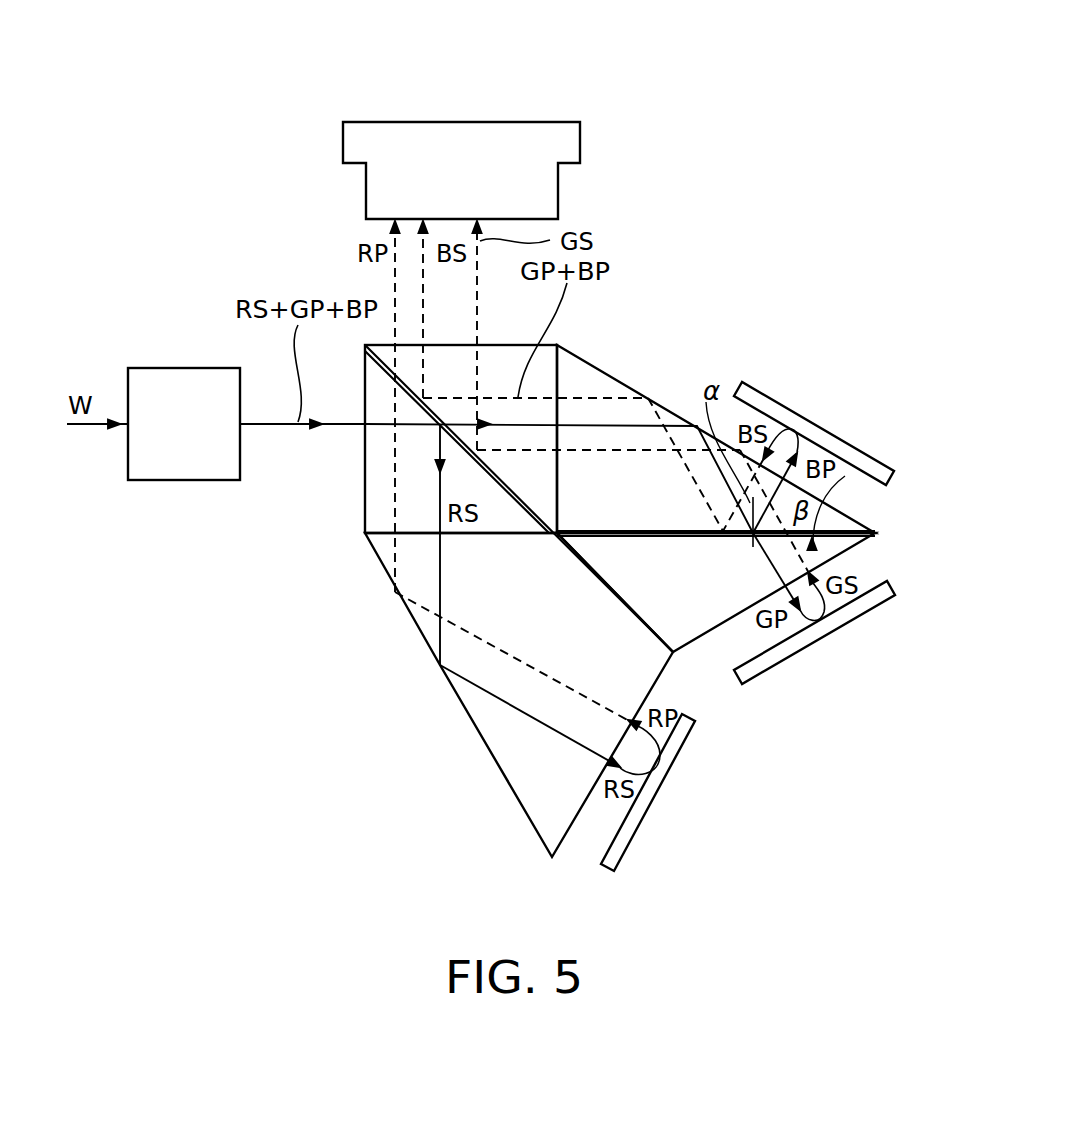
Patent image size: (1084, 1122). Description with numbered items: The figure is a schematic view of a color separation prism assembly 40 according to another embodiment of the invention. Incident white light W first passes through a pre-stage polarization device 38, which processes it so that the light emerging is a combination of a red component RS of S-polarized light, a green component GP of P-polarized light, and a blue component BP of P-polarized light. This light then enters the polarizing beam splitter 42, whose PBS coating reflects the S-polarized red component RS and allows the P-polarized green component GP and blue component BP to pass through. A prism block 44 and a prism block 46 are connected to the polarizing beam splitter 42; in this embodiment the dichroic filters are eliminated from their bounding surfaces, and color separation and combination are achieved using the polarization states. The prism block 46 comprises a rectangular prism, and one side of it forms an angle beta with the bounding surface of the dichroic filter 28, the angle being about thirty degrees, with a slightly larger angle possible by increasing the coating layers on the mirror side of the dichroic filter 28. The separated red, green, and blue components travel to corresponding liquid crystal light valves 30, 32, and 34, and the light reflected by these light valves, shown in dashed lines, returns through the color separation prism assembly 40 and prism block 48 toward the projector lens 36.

The dichroic filter 28 is at (875, 533).
The liquid crystal light valve 30 is at (662, 792).
The liquid crystal light valve 32 is at (847, 623).
The liquid crystal light valve 34 is at (813, 420).
The projector lens 36 is at (463, 122).
The pre-stage polarization device 38 is at (190, 367).
The color separation prism assembly 40 is at (372, 632).
The polarizing beam splitter 42 is at (505, 355).
The prism block 44 is at (490, 728).
The prism block 46 is at (590, 380).
The fourth prism 48 is at (693, 622).